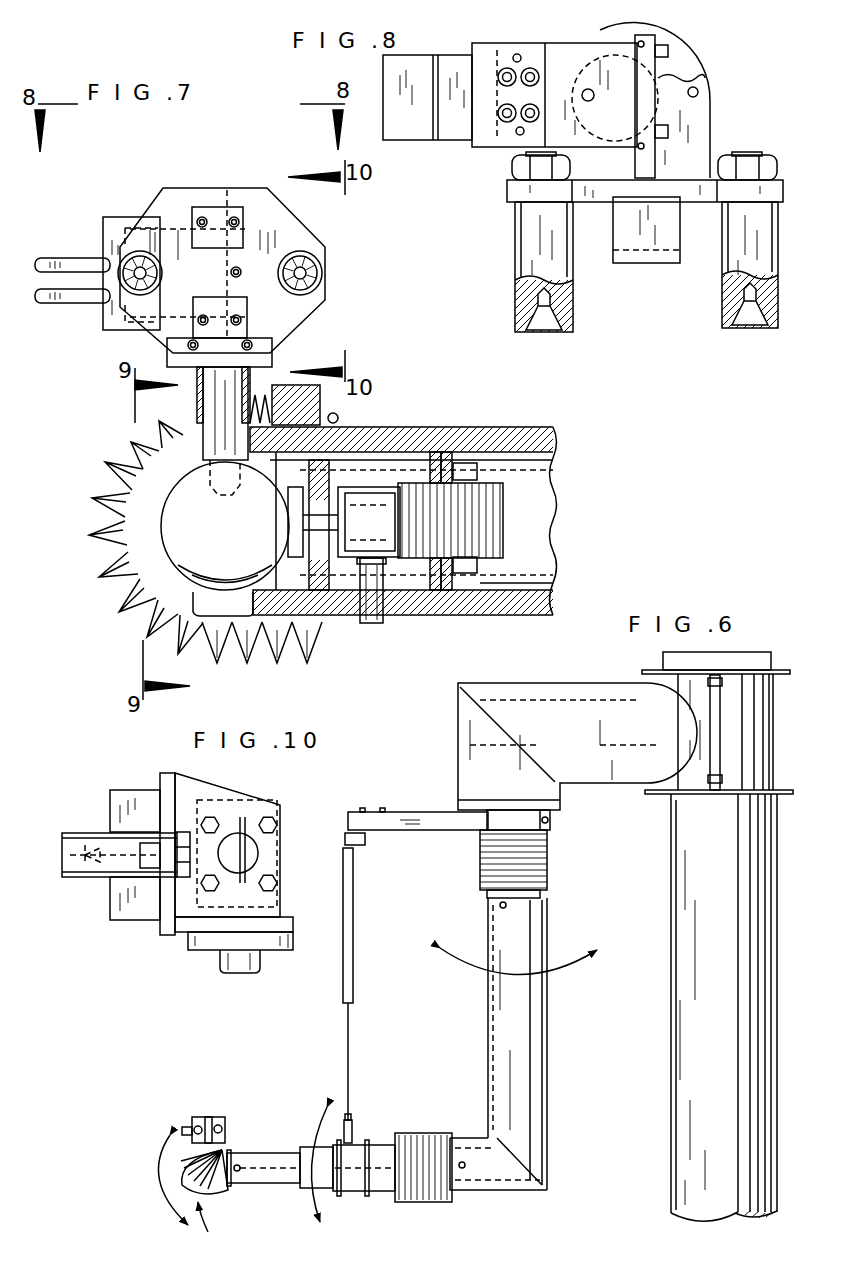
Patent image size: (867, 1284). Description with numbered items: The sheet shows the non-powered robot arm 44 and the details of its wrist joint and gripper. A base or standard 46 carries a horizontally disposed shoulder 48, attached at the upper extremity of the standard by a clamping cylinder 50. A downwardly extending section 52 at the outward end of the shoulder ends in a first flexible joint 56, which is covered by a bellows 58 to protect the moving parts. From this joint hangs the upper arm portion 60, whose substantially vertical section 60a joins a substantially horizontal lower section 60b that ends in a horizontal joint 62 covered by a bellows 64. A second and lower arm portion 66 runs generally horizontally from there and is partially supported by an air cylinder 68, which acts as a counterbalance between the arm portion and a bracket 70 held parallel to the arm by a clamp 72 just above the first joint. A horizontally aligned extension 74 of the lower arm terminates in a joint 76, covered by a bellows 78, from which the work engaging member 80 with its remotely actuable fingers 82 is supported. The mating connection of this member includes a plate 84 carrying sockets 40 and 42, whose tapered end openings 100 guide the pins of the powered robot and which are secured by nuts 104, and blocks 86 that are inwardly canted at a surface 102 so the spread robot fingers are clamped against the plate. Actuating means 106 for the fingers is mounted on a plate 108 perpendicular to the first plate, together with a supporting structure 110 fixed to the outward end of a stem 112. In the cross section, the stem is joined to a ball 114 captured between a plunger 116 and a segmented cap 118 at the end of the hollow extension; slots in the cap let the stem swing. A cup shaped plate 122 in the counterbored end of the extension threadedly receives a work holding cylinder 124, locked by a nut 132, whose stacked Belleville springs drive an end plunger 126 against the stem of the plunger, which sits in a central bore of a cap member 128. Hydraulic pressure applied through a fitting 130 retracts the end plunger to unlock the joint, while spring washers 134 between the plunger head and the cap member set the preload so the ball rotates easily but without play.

In FIG. 8, the socket 40 is at (722, 260).
In FIG. 7, the socket 40 is at (327, 257).
In FIG. 10, the socket 40 is at (75, 877).
In FIG. 6, the socket 40 is at (222, 1125).
In FIG. 8, the socket 42 is at (515, 243).
In FIG. 7, the socket 42 is at (128, 325).
In FIG. 6, the socket 42 is at (195, 1143).
In FIG. 6, the non-powered robot arm 44 is at (432, 1039).
In FIG. 6, the base or standard 46 is at (671, 905).
In FIG. 6, the shoulder 48 is at (600, 683).
In FIG. 6, the clamping cylinder 50 is at (745, 795).
In FIG. 6, the downwardly extending section 52 is at (458, 742).
In FIG. 6, the first flexible joint 56 is at (560, 860).
In FIG. 6, the bellows 58 is at (480, 858).
In FIG. 6, the upper arm portion 60 is at (532, 1002).
In FIG. 6, the substantially vertical section 60a is at (548, 1097).
In FIG. 6, the substantially horizontal lower section 60b is at (510, 1192).
In FIG. 6, the horizontal joint 62 is at (411, 1204).
In FIG. 6, the bellows 64 is at (420, 1135).
In FIG. 6, the second and lower arm portion 66 is at (372, 1140).
In FIG. 6, the air cylinder 68 is at (353, 928).
In FIG. 6, the bracket 70 is at (425, 812).
In FIG. 6, the clamp 72 is at (555, 820).
In FIG. 7, the extension 74 is at (468, 427).
In FIG. 6, the extension 74 is at (266, 1183).
In FIG. 7, the joint 76 is at (108, 452).
In FIG. 6, the joint 76 is at (198, 1194).
In FIG. 7, the bellows 78 is at (118, 610).
In FIG. 8, the work engaging member 80 is at (706, 47).
In FIG. 7, the work engaging member 80 is at (140, 198).
In FIG. 6, the work engaging member 80 is at (226, 1110).
In FIG. 8, the fingers 82 is at (416, 55).
In FIG. 7, the fingers 82 is at (55, 258).
In FIG. 6, the fingers 82 is at (182, 1128).
In FIG. 7, the plate 84 is at (323, 230).
In FIG. 10, the plate 84 is at (178, 775).
In FIG. 8, the blocks 86 is at (613, 255).
In FIG. 7, the blocks 86 is at (208, 207).
In FIG. 10, the blocks 86 is at (130, 790).
In FIG. 6, the blocks 86 is at (207, 1117).
In FIG. 8, the tapered end openings 100 is at (558, 332).
In FIG. 10, the tapered end openings 100 is at (68, 845).
In FIG. 10, the inwardly canted surface 102 is at (128, 882).
In FIG. 8, the nuts 104 is at (512, 167).
In FIG. 8, the actuating means 106 is at (562, 43).
In FIG. 8, the plate 108 is at (700, 78).
In FIG. 10, the plate 108 is at (248, 792).
In FIG. 7, the supporting structure 110 is at (292, 345).
In FIG. 10, the supporting structure 110 is at (292, 920).
In FIG. 7, the stem 112 is at (200, 412).
In FIG. 10, the stem 112 is at (262, 965).
In FIG. 7, the ball 114 is at (112, 566).
In FIG. 7, the plunger 116 is at (303, 560).
In FIG. 7, the cap 118 is at (235, 658).
In FIG. 7, the cup shaped plate 122 is at (438, 615).
In FIG. 7, the work holding cylinder 124 is at (490, 560).
In FIG. 7, the end plunger 126 is at (337, 500).
In FIG. 7, the cap member 128 is at (285, 492).
In FIG. 7, the fitting 130 is at (385, 617).
In FIG. 7, the nut 132 is at (455, 615).
In FIG. 7, the spring washers 134 is at (298, 502).